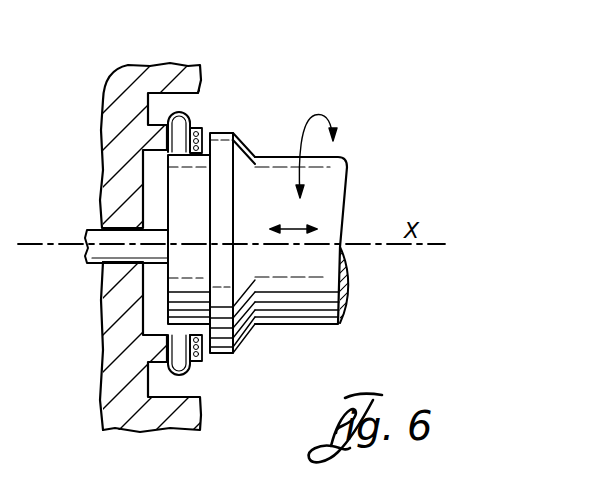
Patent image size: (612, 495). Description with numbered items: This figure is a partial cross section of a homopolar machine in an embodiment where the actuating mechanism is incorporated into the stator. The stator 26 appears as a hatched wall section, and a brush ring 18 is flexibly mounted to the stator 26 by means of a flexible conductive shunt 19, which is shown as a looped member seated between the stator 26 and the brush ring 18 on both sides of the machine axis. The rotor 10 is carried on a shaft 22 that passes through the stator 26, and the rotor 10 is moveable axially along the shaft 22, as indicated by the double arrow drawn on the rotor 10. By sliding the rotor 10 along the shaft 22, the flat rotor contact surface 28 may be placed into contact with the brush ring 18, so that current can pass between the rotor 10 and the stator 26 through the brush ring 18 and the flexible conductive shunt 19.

The rotor 10 is at (333, 182).
The brush ring 18 is at (200, 128).
The flexible conductive shunt 19 is at (192, 112).
The shaft 22 is at (90, 265).
The stator 26 is at (104, 92).
The flat rotor contact surface 28 is at (210, 130).